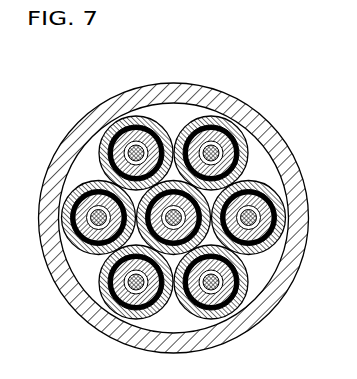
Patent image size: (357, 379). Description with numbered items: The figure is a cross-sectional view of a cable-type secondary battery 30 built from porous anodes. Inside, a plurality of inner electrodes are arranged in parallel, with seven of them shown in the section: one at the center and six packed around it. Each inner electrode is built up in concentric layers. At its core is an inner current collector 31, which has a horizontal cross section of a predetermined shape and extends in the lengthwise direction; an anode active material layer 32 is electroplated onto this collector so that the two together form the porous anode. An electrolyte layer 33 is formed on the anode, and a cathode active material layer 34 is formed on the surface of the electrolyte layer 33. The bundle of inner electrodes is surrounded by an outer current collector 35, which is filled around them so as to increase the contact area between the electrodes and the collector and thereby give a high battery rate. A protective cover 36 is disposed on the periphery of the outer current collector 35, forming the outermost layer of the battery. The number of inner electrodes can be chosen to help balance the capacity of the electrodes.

The cable-type secondary battery 30 is at (61, 110).
The inner current collector 31 is at (285, 198).
The anode active material layer 32 is at (284, 217).
The electrolyte layer 33 is at (280, 222).
The cathode active material layer 34 is at (276, 243).
The outer current collector 35 is at (277, 173).
The protective cover 36 is at (280, 146).